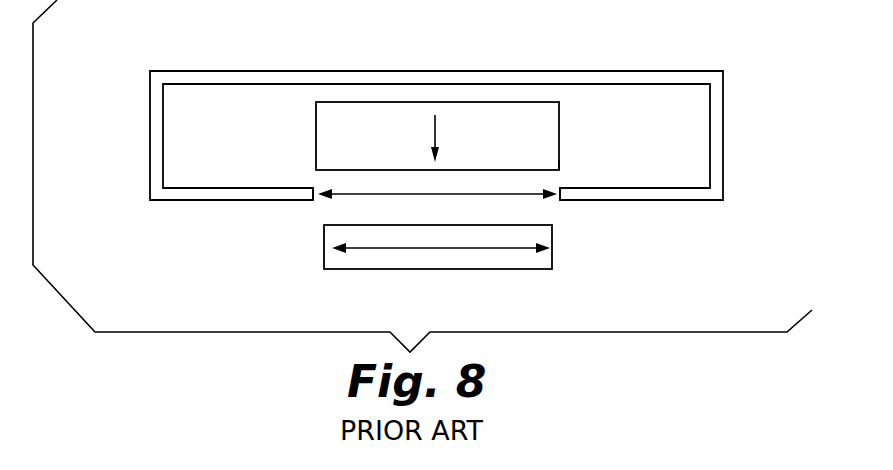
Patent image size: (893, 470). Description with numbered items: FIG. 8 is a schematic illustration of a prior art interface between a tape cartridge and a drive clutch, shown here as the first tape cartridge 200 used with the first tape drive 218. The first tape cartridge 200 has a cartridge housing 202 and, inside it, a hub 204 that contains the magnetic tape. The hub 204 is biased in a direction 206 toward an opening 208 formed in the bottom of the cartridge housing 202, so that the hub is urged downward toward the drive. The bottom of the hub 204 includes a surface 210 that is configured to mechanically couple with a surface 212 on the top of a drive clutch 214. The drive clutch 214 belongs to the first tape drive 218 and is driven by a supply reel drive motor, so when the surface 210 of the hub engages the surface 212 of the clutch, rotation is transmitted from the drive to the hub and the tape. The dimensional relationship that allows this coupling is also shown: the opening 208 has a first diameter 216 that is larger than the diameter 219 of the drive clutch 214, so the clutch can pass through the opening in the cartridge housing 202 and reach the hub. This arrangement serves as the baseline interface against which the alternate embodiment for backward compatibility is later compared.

The first tape cartridge 200 is at (140, 92).
The cartridge housing 202 is at (243, 70).
The hub 204 is at (316, 131).
The direction 206 is at (437, 129).
The opening 208 is at (313, 200).
The surface 210 is at (555, 165).
The surface 212 is at (332, 219).
The drive clutch 214 is at (367, 262).
The first diameter 216 is at (523, 195).
The first tape drive 218 is at (563, 52).
The diameter 219 is at (443, 249).